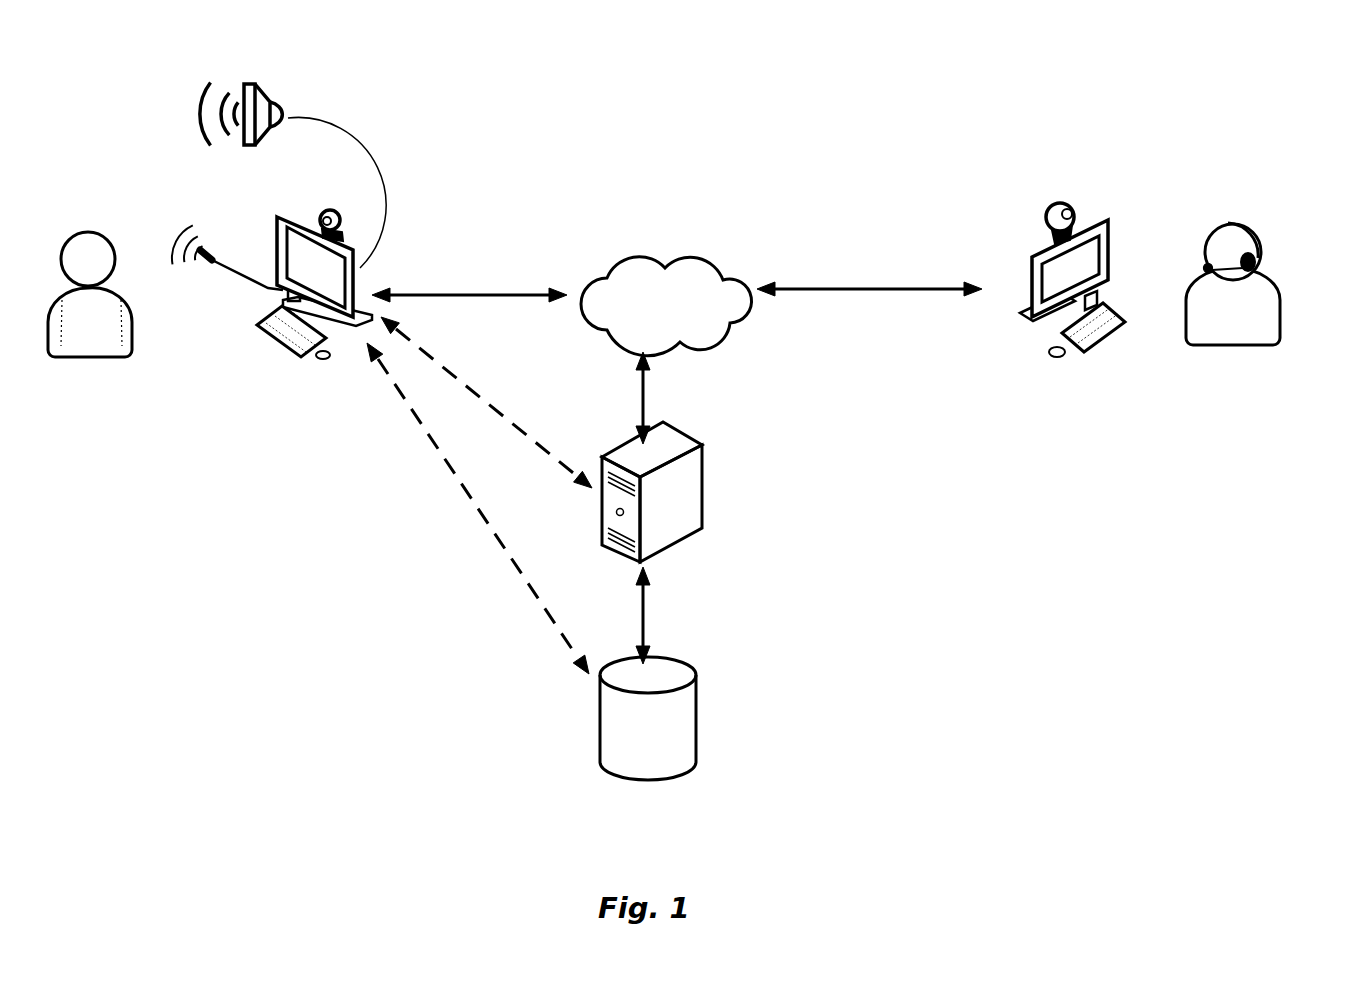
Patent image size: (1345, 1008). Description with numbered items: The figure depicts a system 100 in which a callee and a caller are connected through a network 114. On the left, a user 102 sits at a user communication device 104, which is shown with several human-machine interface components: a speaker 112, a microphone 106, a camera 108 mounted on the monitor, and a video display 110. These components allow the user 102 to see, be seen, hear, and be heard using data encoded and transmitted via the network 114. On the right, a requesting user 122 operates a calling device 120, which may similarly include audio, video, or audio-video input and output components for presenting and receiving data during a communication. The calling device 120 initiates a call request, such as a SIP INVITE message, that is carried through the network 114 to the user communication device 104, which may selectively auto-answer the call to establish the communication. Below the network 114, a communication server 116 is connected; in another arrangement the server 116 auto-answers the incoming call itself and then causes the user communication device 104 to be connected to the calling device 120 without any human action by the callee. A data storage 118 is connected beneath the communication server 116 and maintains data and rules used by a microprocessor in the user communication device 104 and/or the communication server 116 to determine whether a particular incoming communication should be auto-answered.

The system 100 is at (1096, 42).
The user 102 is at (108, 233).
The user communication device 104 is at (442, 131).
The microphone 106 is at (232, 277).
The camera 108 is at (338, 210).
The video display 110 is at (311, 271).
The speaker 112 is at (291, 113).
The network 114 is at (694, 258).
The communication server 116 is at (694, 492).
The data storage 118 is at (689, 720).
The calling device 120 is at (1110, 242).
The requesting user 122 is at (1250, 225).